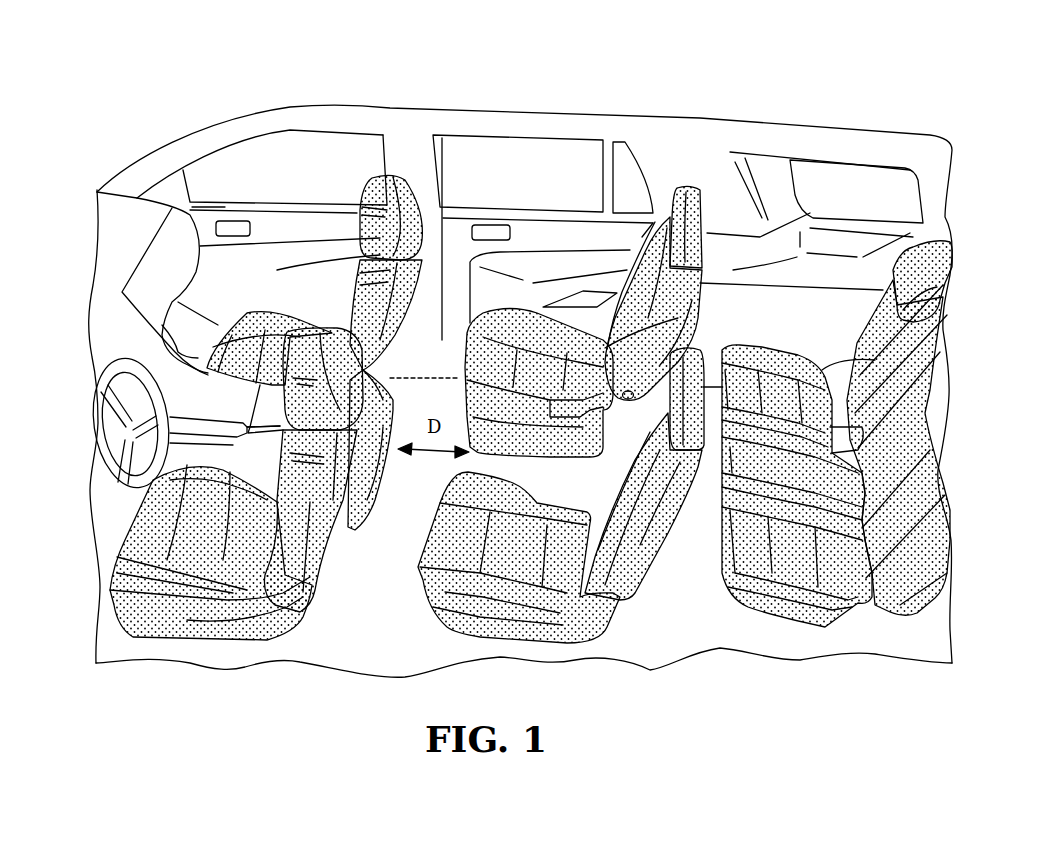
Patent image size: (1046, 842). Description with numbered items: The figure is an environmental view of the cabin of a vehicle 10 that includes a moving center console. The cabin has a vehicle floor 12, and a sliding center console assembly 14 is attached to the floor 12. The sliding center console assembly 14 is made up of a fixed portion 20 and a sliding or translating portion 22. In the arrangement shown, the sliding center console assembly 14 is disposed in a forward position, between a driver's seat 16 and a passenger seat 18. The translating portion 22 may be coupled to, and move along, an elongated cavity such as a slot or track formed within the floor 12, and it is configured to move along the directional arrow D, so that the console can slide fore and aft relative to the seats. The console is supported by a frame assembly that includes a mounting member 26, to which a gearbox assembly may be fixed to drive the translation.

The vehicle 10 is at (168, 78).
The vehicle floor 12 is at (335, 658).
The sliding center console assembly 14 is at (168, 370).
The driver's seat 16 is at (135, 520).
The passenger seat 18 is at (392, 176).
The fixed portion 20 is at (222, 410).
The translating portion 22 is at (390, 400).
The mounting member 26 is at (688, 185).